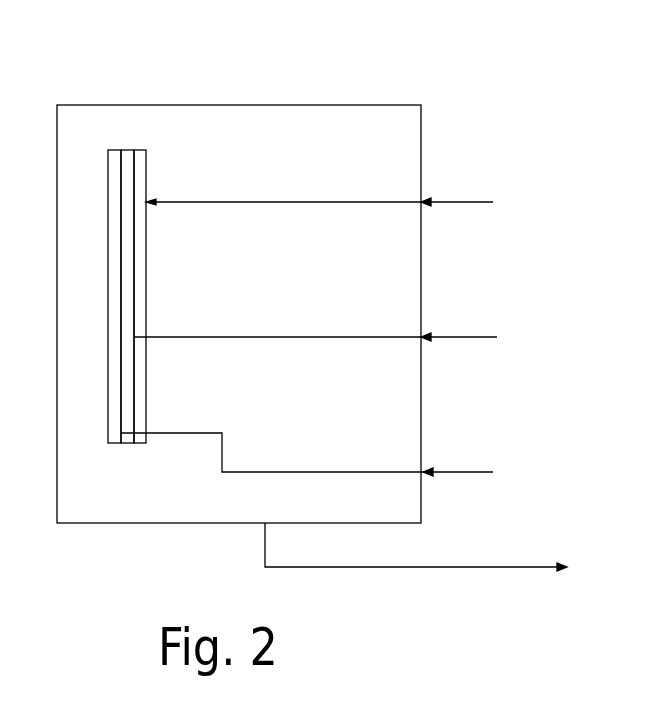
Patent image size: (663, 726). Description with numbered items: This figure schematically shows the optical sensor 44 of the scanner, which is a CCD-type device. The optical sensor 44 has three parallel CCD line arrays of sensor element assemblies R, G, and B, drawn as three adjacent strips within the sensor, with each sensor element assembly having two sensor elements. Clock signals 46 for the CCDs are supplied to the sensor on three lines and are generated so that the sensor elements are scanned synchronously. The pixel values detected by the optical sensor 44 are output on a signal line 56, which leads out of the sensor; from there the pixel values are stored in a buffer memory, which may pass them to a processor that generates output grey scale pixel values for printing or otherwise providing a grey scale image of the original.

The optical sensor 44 is at (460, 87).
The clock signals 46 is at (470, 203).
The signal line 56 is at (496, 563).
The sensor element assembly R is at (115, 447).
The sensor element assembly G is at (127, 443).
The sensor element assembly B is at (138, 447).